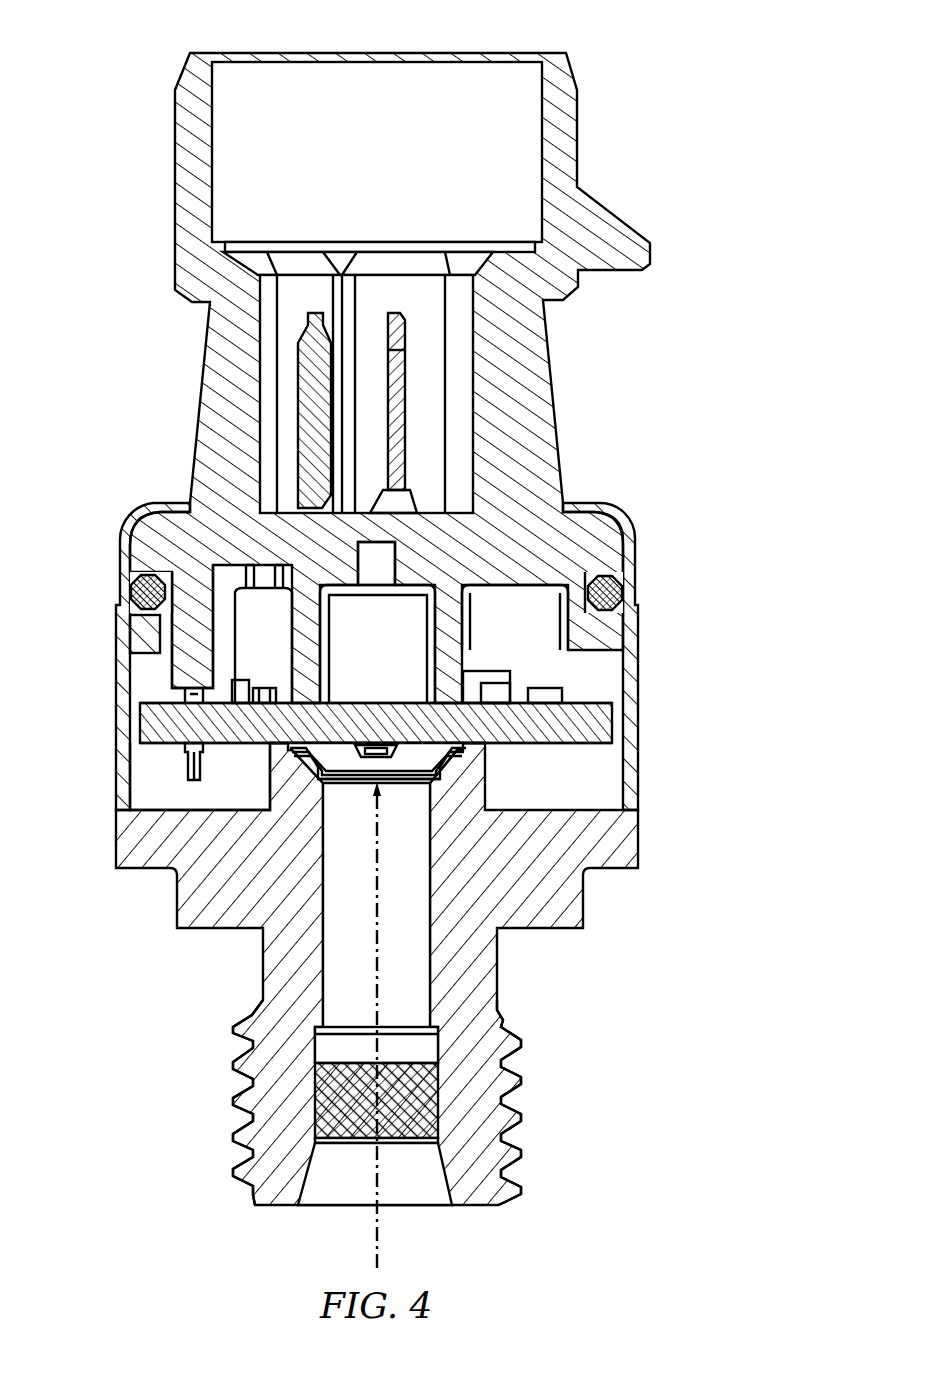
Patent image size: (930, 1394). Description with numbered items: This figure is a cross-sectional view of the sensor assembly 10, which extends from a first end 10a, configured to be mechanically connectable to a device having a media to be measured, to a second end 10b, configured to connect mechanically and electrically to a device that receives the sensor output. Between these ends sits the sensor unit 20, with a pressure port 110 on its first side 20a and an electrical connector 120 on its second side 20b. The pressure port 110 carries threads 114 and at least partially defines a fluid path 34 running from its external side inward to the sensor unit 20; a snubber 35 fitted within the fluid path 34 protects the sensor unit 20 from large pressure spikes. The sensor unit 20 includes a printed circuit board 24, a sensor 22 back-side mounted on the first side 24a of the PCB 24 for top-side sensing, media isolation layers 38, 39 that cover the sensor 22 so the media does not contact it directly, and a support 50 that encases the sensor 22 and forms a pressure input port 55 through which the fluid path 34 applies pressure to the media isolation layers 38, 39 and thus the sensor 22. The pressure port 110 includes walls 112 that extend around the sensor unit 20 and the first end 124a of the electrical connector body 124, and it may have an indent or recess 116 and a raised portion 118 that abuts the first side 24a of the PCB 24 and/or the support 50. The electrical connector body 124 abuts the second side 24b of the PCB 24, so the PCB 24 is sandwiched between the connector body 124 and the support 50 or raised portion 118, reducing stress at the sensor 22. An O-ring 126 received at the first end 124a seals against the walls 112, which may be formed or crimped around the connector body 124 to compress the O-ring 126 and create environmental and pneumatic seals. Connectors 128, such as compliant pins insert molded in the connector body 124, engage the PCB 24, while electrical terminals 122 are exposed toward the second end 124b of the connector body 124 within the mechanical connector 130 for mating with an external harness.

The sensor assembly 10 is at (372, 637).
The first end 10a is at (376, 887).
The second end 10b is at (369, 456).
The sensor unit 20 is at (373, 688).
The first side 20a is at (358, 797).
The second side 20b is at (592, 684).
The sensor 22 is at (300, 768).
The printed circuit board 24 is at (423, 725).
The first side of the PCB 24a is at (612, 748).
The second side of the PCB 24b is at (600, 710).
The fluid path 34 is at (385, 1240).
The snubber 35 is at (430, 1085).
The media isolation layer 38 is at (420, 757).
The media isolation layer 39 is at (410, 768).
The support 50 is at (305, 785).
The pressure input port 55 is at (410, 775).
The pressure port 110 is at (197, 1135).
The walls 112 is at (118, 630).
The threads 114 is at (524, 1066).
The indent/recess 116 is at (135, 808).
The raised portion 118 is at (462, 763).
The electrical connector 120 is at (369, 456).
The electrical terminals 122 is at (400, 378).
The electrical connector body 124 is at (530, 422).
The first end of the connector body 124a is at (145, 664).
The second end of the connector body 124b is at (170, 62).
The O-ring 126 is at (632, 593).
The connectors 128 is at (195, 775).
The mechanical connector 130 is at (462, 288).